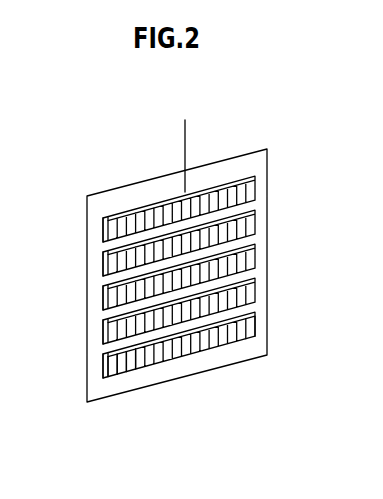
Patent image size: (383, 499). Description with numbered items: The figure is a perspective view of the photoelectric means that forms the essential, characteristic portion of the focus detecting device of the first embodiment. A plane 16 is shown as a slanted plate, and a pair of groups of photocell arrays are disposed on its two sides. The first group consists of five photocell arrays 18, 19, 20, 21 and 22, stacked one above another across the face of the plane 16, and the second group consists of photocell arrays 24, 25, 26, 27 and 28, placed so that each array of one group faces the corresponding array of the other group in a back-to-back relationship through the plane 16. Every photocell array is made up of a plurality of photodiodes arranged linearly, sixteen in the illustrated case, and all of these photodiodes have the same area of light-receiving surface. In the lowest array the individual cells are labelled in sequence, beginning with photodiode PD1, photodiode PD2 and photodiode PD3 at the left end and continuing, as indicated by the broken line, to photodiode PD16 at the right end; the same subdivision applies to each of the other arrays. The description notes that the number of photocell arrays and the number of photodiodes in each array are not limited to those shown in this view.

The plane 16 is at (253, 151).
The photocell array 18 is at (257, 179).
The photocell array 19 is at (257, 214).
The photocell array 20 is at (257, 246).
The photocell array 21 is at (257, 282).
The photocell array 22 is at (257, 316).
The photocell array 24 is at (102, 232).
The photocell array 25 is at (102, 268).
The photocell array 26 is at (102, 303).
The photocell array 27 is at (102, 338).
The photocell array 28 is at (102, 366).
The photodiode PD1 is at (109, 377).
The photodiode PD2 is at (118, 374).
The photodiode PD3 is at (128, 371).
The photodiode PD16 is at (254, 334).